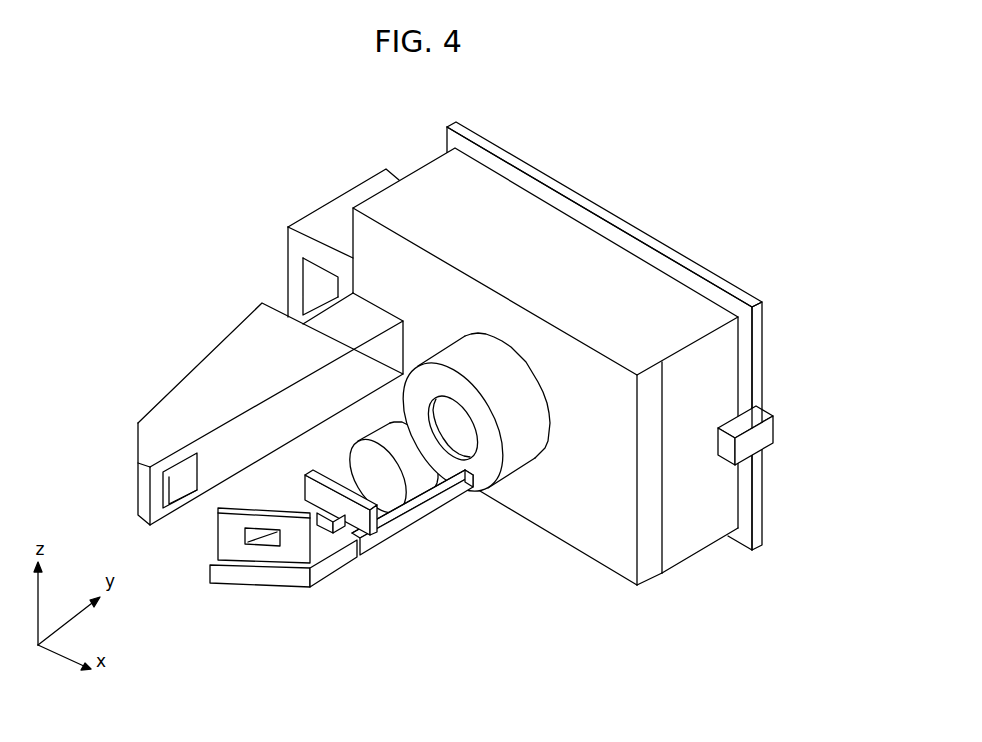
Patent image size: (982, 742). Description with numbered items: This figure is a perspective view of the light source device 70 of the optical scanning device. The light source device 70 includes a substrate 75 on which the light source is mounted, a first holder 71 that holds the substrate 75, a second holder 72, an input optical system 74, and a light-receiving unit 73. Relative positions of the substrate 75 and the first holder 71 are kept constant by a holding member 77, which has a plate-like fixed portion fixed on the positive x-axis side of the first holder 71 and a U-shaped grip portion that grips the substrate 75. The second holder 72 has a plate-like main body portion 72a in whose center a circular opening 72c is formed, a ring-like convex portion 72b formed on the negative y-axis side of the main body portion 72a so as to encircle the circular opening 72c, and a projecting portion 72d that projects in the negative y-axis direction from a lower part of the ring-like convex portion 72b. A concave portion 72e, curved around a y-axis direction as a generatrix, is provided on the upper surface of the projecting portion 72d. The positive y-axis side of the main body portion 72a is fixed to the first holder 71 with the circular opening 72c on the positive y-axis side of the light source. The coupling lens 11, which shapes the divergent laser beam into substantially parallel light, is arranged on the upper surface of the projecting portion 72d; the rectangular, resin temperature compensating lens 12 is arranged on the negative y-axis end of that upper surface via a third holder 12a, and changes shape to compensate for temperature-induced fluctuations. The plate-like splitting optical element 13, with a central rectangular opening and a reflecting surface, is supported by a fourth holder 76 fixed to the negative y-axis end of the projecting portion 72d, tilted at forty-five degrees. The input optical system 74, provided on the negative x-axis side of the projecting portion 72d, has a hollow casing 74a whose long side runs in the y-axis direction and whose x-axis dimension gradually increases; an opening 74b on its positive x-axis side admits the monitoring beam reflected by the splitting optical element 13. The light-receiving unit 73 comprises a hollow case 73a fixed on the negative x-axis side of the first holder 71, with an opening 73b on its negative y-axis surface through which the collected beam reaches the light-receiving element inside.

The light source device 70 is at (189, 148).
The first holder 71 is at (553, 225).
The second holder 72 is at (654, 521).
The main body portion 72a is at (652, 570).
The ring-like convex portion 72b is at (541, 393).
The circular opening 72c is at (469, 447).
The projecting portion 72d is at (390, 530).
The concave portion 72e is at (442, 471).
The light-receiving unit 73 is at (360, 170).
The case 73a is at (321, 212).
The opening 73b is at (313, 290).
The input optical system 74 is at (160, 385).
The casing 74a is at (223, 337).
The opening 74b is at (181, 498).
The substrate 75 is at (660, 241).
The fourth holder 76 is at (260, 578).
The holding member 77 is at (767, 432).
The coupling lens 11 is at (416, 489).
The temperature compensating lens 12 is at (345, 477).
The third holder 12a is at (318, 532).
The splitting optical element 13 is at (246, 516).